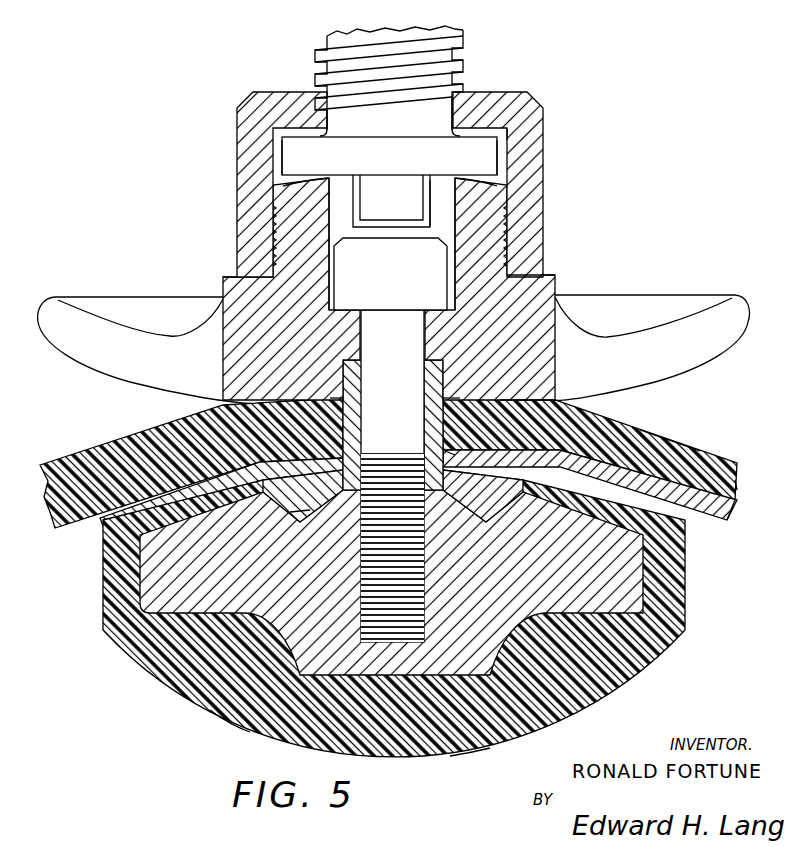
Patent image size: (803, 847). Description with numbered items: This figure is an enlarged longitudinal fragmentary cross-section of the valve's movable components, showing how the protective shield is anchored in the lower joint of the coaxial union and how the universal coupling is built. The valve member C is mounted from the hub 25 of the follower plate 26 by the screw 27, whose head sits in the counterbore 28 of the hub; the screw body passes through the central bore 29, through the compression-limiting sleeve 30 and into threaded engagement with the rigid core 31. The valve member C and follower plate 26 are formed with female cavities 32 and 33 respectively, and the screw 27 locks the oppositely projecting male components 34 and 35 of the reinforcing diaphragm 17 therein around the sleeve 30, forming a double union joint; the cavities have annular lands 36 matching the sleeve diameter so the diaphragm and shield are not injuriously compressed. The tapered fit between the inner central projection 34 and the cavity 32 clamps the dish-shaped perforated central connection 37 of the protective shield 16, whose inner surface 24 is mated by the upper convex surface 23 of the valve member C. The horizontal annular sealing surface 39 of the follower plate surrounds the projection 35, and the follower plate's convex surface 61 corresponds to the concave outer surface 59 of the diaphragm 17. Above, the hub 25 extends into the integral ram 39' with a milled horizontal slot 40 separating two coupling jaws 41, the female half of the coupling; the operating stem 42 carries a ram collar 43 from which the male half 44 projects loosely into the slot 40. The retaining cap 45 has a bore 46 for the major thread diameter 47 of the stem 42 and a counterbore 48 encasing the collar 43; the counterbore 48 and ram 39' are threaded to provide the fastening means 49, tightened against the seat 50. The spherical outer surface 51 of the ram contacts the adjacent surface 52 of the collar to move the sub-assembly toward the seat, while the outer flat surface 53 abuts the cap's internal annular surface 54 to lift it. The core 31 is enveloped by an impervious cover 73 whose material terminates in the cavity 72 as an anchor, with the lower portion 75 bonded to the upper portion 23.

The operating stem 42 is at (411, 70).
The major thread diameter 47 is at (466, 58).
The bore 46 is at (462, 96).
The internal flat annular surface 54 is at (503, 108).
The retaining cap 45 is at (540, 102).
The counterbore 48 is at (508, 146).
The outer flat surface 53 is at (289, 137).
The ram collar 43 is at (389, 156).
The adjacent surface of the ram collar 52 is at (300, 182).
The outer surface of the ram 51 is at (487, 183).
The coupling jaws 41 is at (437, 203).
The milled horizontal slot 40 is at (360, 200).
The male half of the universal coupling 44 is at (391, 201).
The ram 39' is at (239, 236).
The counterbore 28 is at (448, 240).
The fastening means 49 is at (510, 246).
The seat 50 is at (552, 276).
The hub 25 is at (223, 282).
The follower plate 26 is at (37, 308).
The central bore 29 is at (360, 336).
The screw 27 is at (392, 476).
The lands 36 is at (436, 360).
The female cavity of the follower plate 33 is at (340, 378).
The male component of the diaphragm 35 is at (448, 382).
The horizontal annular sealing surface of the follower plate 39 is at (548, 378).
The surface of the follower plate 61 is at (698, 357).
The compression-limiting sleeve 30 is at (358, 426).
The outer surface of the diaphragm 59 is at (648, 428).
The upper convex surface 23 is at (668, 465).
The inner central projection 34 is at (446, 456).
The reinforcing diaphragm 17 is at (744, 490).
The central connection of the protective shield 37 is at (468, 480).
The female cavity of the valve member 32 is at (285, 498).
The cavity of the rigid core 72 is at (297, 518).
The protective shield 16 is at (735, 520).
The inner surface of the shield 24 is at (718, 530).
The core 31 is at (391, 582).
The lower portion of the covering 75 is at (230, 722).
The cover 73 is at (475, 744).
The valve member C is at (600, 700).